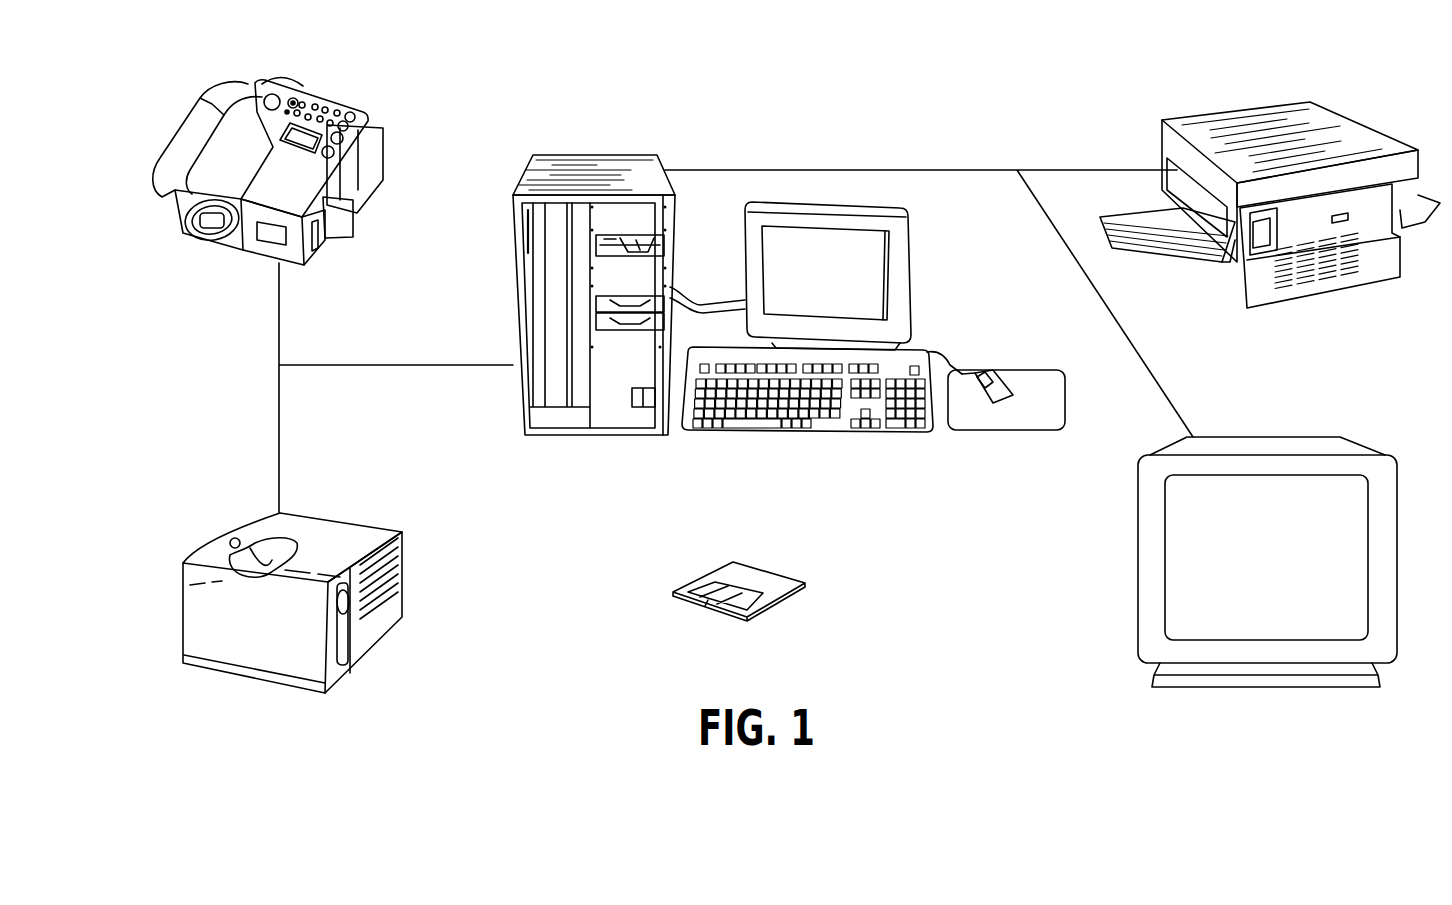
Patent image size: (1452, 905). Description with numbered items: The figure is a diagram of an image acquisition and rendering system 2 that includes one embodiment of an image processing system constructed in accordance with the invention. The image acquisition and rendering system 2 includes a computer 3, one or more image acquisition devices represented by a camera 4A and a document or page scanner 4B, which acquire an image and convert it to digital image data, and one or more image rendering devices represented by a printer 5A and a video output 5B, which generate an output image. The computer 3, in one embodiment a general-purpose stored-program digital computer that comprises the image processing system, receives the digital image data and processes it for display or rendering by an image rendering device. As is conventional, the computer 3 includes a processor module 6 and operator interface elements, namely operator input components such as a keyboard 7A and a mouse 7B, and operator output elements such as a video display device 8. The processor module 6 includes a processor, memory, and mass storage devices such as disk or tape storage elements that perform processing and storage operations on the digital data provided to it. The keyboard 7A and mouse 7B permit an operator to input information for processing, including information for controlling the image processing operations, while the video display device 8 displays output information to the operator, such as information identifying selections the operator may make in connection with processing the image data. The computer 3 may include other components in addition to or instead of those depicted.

The image acquisition and rendering system 2 is at (1375, 44).
The computer 3 is at (462, 428).
The camera 4A is at (362, 110).
The document or page scanner 4B is at (402, 558).
The printer 5A is at (1237, 107).
The video output 5B is at (1397, 600).
The processor module 6 is at (593, 155).
The keyboard 7A is at (832, 433).
The mouse 7B is at (990, 402).
The video display device 8 is at (865, 202).